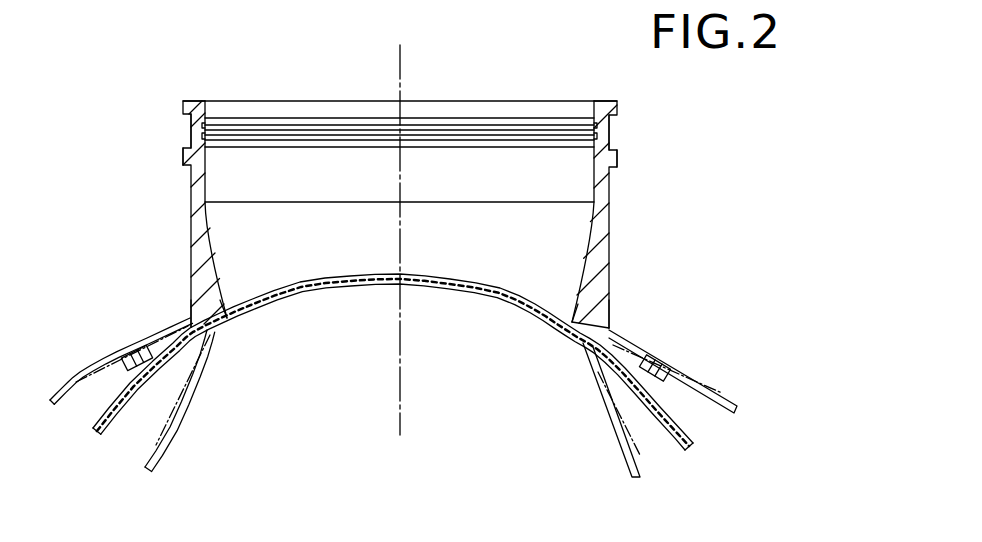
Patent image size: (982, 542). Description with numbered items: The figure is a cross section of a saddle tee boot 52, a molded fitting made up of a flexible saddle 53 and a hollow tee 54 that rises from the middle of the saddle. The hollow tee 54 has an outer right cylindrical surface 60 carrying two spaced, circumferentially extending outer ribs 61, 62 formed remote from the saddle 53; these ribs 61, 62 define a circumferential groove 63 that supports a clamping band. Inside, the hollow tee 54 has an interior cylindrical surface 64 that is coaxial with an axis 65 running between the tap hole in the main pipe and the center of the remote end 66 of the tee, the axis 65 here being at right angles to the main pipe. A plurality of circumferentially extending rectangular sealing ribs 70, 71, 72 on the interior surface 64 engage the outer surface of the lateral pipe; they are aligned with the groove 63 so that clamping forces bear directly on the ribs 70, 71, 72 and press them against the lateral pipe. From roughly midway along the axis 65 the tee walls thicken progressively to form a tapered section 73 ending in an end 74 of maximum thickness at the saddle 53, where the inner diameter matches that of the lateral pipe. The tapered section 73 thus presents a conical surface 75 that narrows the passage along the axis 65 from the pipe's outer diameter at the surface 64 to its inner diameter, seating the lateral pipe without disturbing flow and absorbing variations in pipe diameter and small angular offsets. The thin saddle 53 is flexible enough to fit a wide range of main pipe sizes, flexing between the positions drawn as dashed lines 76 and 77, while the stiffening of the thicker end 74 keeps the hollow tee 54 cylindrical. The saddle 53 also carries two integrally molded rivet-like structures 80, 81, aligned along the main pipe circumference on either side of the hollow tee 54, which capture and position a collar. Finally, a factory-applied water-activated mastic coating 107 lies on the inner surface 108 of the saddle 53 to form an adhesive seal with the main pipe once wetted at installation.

The saddle tee boot 52 is at (452, 305).
The flexible saddle 53 is at (706, 426).
The hollow tee 54 is at (631, 190).
The outer right cylindrical surface 60 is at (190, 223).
The outer rib 61 is at (183, 156).
The outer rib 62 is at (187, 101).
The circumferential groove 63 is at (191, 125).
The interior cylindrical surface 64 is at (219, 174).
The axis 65 is at (403, 229).
The remote end 66 is at (450, 88).
The sealing rib 70 is at (592, 128).
The sealing rib 71 is at (590, 134).
The sealing rib 72 is at (590, 139).
The tapered section 73 is at (190, 274).
The end of maximum thickness 74 is at (220, 300).
The conical surface 75 is at (213, 233).
The dashed line 76 is at (76, 382).
The dashed line 77 is at (170, 417).
The rivet-like structure 80 is at (130, 346).
The rivet-like structure 81 is at (652, 362).
The coating 107 is at (535, 316).
The inner surface 108 is at (608, 386).